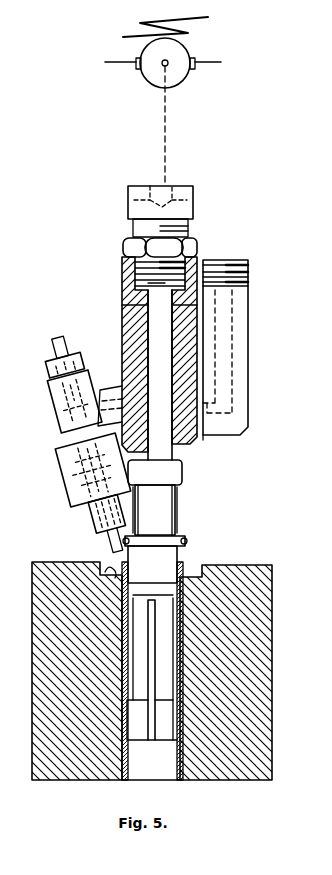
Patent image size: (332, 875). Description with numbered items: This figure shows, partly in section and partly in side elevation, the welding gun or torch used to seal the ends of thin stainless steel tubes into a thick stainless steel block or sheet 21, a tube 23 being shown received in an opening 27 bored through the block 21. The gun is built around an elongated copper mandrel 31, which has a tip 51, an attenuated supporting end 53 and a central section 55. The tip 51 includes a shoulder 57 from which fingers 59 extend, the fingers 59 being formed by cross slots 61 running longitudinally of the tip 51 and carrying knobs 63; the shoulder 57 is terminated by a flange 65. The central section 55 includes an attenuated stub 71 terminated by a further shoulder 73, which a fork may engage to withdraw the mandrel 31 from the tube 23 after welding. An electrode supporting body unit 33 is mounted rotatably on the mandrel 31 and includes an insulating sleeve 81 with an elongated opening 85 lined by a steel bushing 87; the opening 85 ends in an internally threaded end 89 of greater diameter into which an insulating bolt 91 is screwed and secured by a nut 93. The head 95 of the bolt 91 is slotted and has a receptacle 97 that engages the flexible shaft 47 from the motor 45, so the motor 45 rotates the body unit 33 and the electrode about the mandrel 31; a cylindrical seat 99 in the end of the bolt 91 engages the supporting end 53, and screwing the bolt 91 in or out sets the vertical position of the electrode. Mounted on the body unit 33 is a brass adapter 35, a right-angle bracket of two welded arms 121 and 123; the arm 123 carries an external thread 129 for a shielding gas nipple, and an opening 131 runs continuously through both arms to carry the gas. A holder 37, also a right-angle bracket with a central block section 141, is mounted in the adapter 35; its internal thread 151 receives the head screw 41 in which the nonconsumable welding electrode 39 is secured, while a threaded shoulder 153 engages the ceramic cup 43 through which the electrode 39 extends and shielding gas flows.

The block 21 is at (265, 628).
The U-shaped tube 23 is at (165, 776).
The opening 27 is at (186, 546).
The mandrel 31 is at (177, 510).
The electrode supporting body unit 33 is at (198, 262).
The adapter 35 is at (240, 432).
The holder 37 is at (29, 363).
The nonconsumable welding electrode 39 is at (108, 548).
The head screw 41 is at (55, 352).
The ceramic cup 43 is at (61, 478).
The motor 45 is at (180, 84).
The flexible shaft 47 is at (165, 146).
The tip 51 is at (137, 640).
The attenuated supporting end 53 is at (155, 340).
The central section 55 is at (155, 510).
The shoulder 57 is at (152, 564).
The fingers 59 is at (137, 665).
The cross slots 61 is at (150, 742).
The knobs 63 is at (137, 737).
The flange 65 is at (157, 545).
The attenuated stub 71 is at (177, 497).
The shoulder 73 is at (182, 470).
The sleeve 81 is at (123, 300).
The elongated opening 85 is at (145, 357).
The bushing 87 is at (135, 327).
The internally threaded end 89 is at (124, 263).
The bolt 91 is at (188, 231).
The nut 93 is at (124, 246).
The head 95 is at (186, 190).
The receptacle 97 is at (152, 188).
The cylindrical seat 99 is at (124, 283).
The arm 121 is at (120, 395).
The arm 123 is at (248, 348).
The external thread 129 is at (248, 277).
The opening 131 is at (204, 438).
The central block section 141 is at (61, 418).
The internal thread 151 is at (121, 596).
The threaded shoulder 153 is at (187, 547).